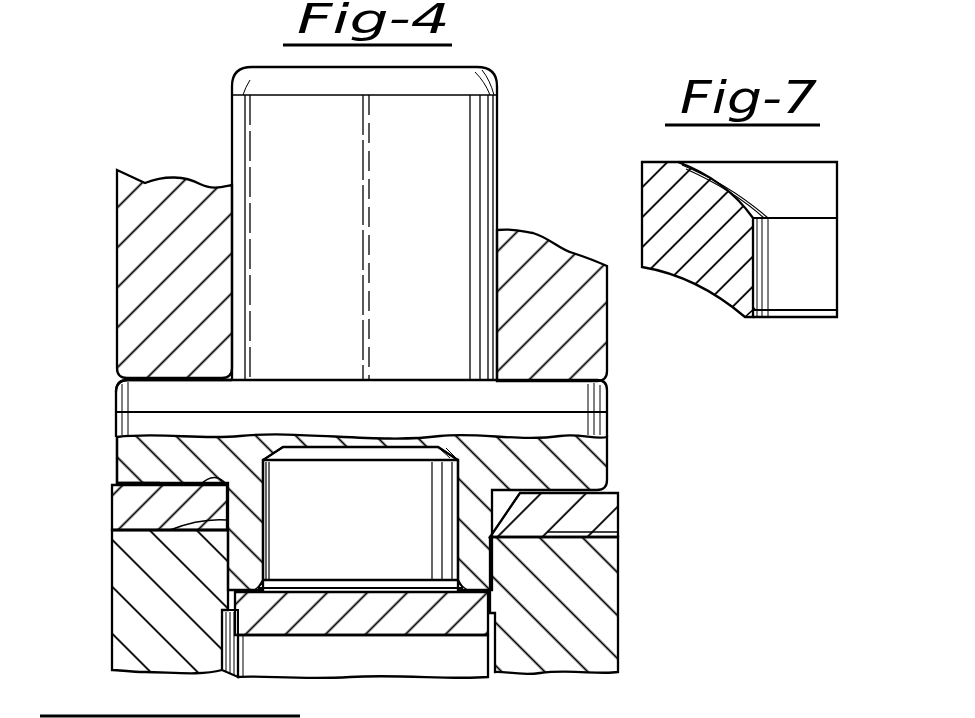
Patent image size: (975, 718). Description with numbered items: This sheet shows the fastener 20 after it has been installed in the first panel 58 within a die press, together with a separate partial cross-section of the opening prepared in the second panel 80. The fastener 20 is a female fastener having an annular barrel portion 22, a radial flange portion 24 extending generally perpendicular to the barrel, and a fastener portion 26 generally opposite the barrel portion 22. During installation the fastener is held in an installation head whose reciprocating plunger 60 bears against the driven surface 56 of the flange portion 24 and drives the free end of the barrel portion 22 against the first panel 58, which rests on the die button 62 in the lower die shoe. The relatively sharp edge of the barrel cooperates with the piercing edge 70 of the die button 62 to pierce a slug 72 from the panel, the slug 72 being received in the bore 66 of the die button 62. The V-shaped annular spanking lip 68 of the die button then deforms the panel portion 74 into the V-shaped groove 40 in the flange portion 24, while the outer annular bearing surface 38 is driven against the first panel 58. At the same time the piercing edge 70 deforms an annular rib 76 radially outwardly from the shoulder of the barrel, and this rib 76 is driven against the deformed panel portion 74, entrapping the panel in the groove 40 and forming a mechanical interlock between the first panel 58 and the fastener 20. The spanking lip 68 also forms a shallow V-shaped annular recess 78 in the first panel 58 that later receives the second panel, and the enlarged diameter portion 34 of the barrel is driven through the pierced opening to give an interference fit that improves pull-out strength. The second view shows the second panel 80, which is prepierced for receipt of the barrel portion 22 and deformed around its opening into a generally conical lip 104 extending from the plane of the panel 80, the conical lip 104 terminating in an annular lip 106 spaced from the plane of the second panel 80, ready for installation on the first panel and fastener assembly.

In FIG. 4, the fastener 20 is at (108, 387).
In FIG. 4, the barrel portion 22 is at (236, 571).
In FIG. 4, the radial flange portion 24 is at (590, 438).
In FIG. 4, the fastener portion 26 is at (326, 160).
In FIG. 4, the enlarged diameter portion of barrel portion 34 is at (540, 488).
In FIG. 4, the outer annular bearing surface 38 is at (618, 506).
In FIG. 4, the V-shaped groove 40 is at (130, 466).
In FIG. 4, the driven surface 56 is at (560, 372).
In FIG. 4, the first panel 58 is at (126, 518).
In FIG. 4, the reciprocating plunger 60 is at (170, 232).
In FIG. 4, the die button 62 is at (600, 642).
In FIG. 4, the bore 66 is at (236, 655).
In FIG. 4, the annular spanking lip 68 is at (560, 522).
In FIG. 4, the piercing edge 70 is at (265, 545).
In FIG. 4, the slug 72 is at (405, 616).
In FIG. 4, the panel portion 74 is at (268, 478).
In FIG. 4, the annular rib 76 is at (266, 516).
In FIG. 4, the V-shaped annular recess 78 is at (192, 540).
In FIG. 7, the second panel 80 is at (667, 222).
In FIG. 7, the conical lip 104 is at (740, 252).
In FIG. 7, the annular lip 106 is at (750, 320).